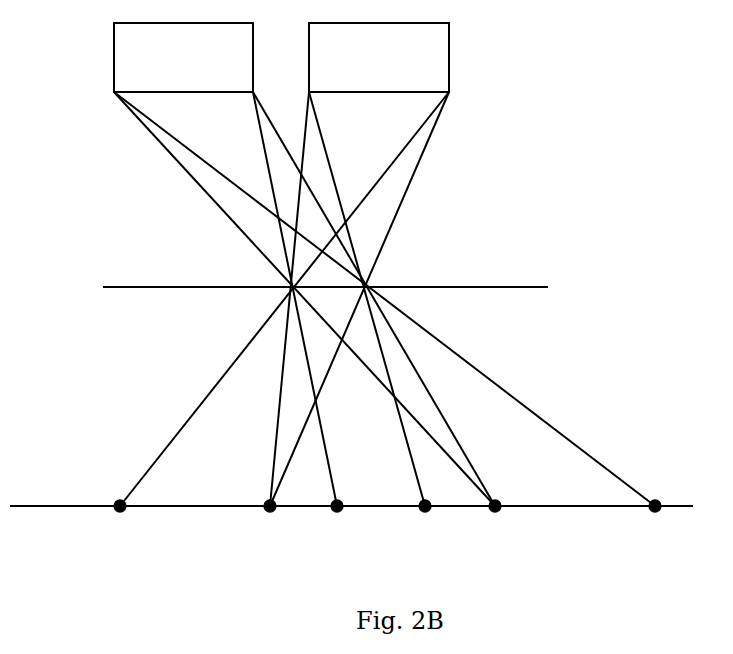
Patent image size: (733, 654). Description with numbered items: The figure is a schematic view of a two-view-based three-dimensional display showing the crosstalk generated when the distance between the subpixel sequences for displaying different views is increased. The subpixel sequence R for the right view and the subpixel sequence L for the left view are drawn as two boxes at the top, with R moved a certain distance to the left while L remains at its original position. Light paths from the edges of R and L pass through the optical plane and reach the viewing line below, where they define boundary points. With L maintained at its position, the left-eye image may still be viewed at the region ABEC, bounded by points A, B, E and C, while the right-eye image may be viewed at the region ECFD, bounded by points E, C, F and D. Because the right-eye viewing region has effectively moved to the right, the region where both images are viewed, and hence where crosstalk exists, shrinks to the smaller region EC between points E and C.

The subpixel sequence for a right view R is at (183, 57).
The subpixel sequence for a left view L is at (379, 57).
The point A of viewing region A is at (120, 527).
The point B of viewing region B is at (268, 527).
The point C of viewing region C is at (428, 527).
The point D of viewing region D is at (656, 527).
The point E of viewing region E is at (338, 527).
The point F of viewing region F is at (496, 527).